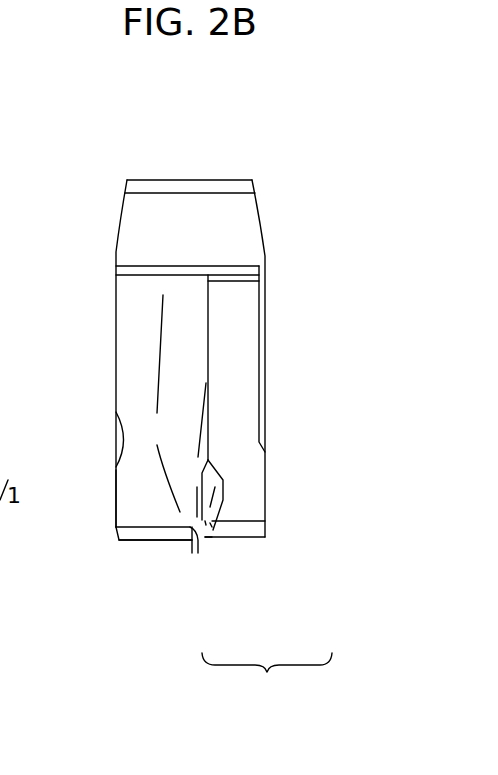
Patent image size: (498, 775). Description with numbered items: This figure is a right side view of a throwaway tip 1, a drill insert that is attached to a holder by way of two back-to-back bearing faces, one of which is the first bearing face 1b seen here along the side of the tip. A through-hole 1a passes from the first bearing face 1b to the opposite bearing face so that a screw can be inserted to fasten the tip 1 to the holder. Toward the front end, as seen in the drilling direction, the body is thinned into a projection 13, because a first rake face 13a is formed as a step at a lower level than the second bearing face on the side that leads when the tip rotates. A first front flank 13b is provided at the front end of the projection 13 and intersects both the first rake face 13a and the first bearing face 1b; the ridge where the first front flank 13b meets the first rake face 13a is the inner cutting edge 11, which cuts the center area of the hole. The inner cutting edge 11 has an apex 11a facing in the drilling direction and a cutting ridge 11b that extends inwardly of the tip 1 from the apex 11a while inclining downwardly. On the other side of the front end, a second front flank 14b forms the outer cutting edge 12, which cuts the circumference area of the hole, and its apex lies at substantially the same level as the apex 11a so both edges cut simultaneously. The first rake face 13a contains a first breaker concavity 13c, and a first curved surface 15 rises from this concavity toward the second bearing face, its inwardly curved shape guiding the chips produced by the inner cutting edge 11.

The throwaway tip 1 is at (127, 176).
The through-hole 1a is at (127, 440).
The first bearing face 1b is at (117, 493).
The inner cutting edge 11 is at (267, 684).
The apex 11a is at (198, 553).
The cutting ridge 11b is at (210, 540).
The outer cutting edge 12 is at (192, 553).
The projection 13 is at (265, 397).
The first rake face 13a is at (207, 380).
The first front flank 13b is at (247, 530).
The first breaker concavity 13c is at (220, 502).
The second front flank 14b is at (150, 533).
The first curved surface 15 is at (172, 437).